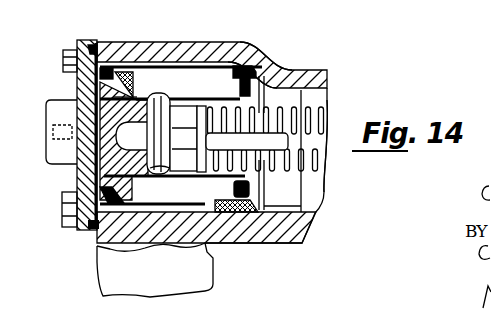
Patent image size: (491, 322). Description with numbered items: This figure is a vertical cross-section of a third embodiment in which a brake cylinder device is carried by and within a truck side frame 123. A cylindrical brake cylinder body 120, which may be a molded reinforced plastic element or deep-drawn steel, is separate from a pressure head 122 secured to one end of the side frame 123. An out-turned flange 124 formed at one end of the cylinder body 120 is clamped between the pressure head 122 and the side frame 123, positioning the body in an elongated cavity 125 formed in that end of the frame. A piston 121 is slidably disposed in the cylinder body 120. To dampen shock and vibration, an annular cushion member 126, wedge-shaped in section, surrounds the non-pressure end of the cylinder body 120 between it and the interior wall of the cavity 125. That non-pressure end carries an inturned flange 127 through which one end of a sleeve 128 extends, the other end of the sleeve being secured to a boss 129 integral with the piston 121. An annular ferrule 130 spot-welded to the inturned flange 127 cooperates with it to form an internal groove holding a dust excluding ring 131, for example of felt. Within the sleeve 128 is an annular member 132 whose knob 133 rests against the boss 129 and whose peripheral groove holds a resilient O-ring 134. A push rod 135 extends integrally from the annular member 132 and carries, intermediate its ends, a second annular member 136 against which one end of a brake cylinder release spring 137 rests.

The brake cylinder body 120 is at (175, 62).
The piston 121 is at (77, 108).
The pressure head 122 is at (82, 43).
The truck side frame 123 is at (204, 52).
The out-turned flange 124 is at (95, 45).
The elongated cavity 125 is at (134, 62).
The annular cushion member 126 is at (268, 50).
The inturned flange 127 is at (276, 70).
The sleeve 128 is at (168, 98).
The boss 129 is at (100, 97).
The annular ferrule 130 is at (237, 181).
The dust excluding ring 131 is at (249, 187).
The annular member 132 is at (166, 168).
The knob 133 is at (128, 170).
The resilient O-ring 134 is at (126, 97).
The push rod 135 is at (268, 140).
The second annular member 136 is at (198, 88).
The brake cylinder release spring 137 is at (323, 113).